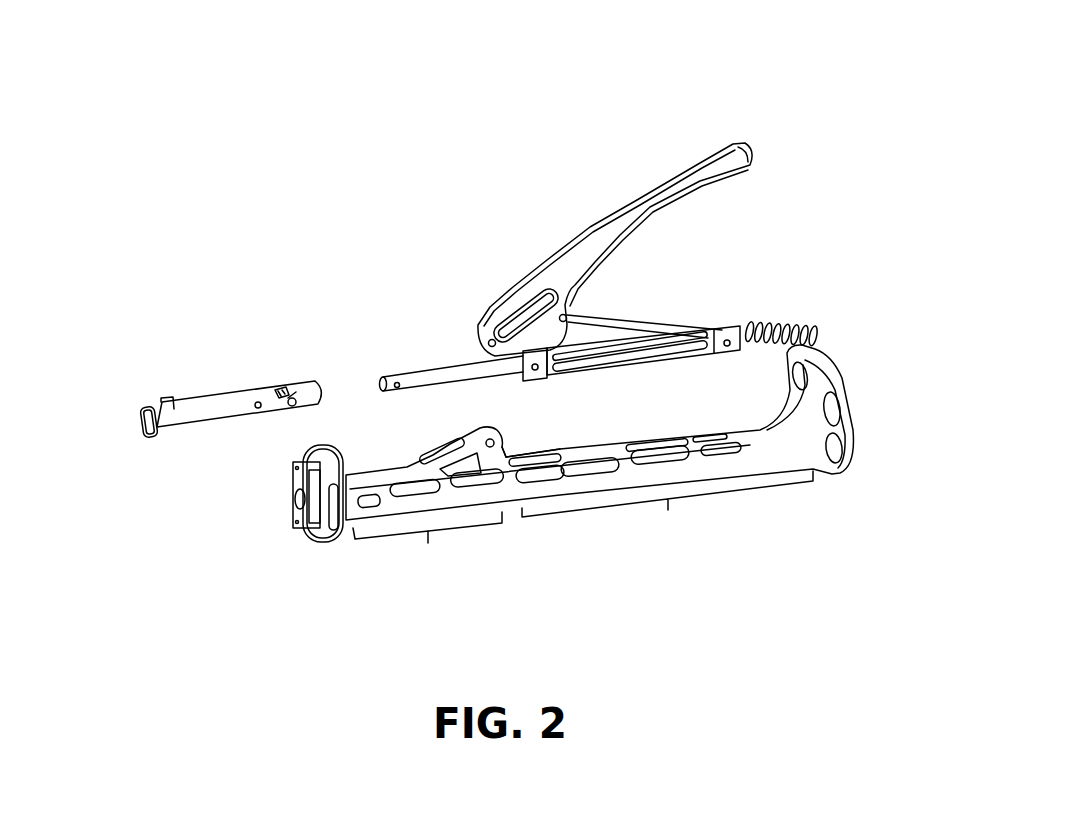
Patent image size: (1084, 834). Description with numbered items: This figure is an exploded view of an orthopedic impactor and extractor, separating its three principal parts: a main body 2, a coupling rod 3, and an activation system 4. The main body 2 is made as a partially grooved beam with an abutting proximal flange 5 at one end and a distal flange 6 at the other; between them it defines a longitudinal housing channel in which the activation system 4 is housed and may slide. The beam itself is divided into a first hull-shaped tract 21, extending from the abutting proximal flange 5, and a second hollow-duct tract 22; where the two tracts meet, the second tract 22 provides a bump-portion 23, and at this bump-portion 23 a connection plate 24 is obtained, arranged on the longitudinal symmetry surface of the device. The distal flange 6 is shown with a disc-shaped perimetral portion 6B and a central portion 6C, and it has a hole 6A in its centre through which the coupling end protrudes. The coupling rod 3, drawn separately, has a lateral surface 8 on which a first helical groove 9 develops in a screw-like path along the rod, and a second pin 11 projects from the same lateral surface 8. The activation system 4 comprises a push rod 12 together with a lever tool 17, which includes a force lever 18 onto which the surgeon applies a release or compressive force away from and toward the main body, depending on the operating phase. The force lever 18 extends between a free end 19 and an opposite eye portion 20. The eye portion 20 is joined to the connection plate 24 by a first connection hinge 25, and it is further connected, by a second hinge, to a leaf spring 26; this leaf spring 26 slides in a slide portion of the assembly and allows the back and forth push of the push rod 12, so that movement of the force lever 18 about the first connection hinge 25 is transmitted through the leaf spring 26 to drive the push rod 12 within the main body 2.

The main body 2 is at (643, 447).
The coupling rod 3 is at (257, 375).
The activation system 4 is at (580, 291).
The abutting proximal flange 5 is at (842, 387).
The distal flange 6 is at (230, 539).
The hole 6A is at (298, 498).
The disc-shaped perimetral portion 6B is at (335, 538).
The central portion 6C is at (283, 477).
The lateral surface 8 is at (193, 402).
The first helical groove 9 is at (296, 392).
The second pin 11 is at (255, 400).
The push rod 12 is at (437, 352).
The lever tool 17 is at (618, 186).
The force lever 18 is at (705, 188).
The free end 19 is at (745, 143).
The eye portion 20 is at (523, 313).
The first hull-shaped tract 21 is at (667, 515).
The second hollow-duct tract 22 is at (427, 548).
The bump-portion 23 is at (498, 462).
The connection plate 24 is at (509, 451).
The first connection hinge 25 is at (485, 442).
The leaf spring 26 is at (635, 330).